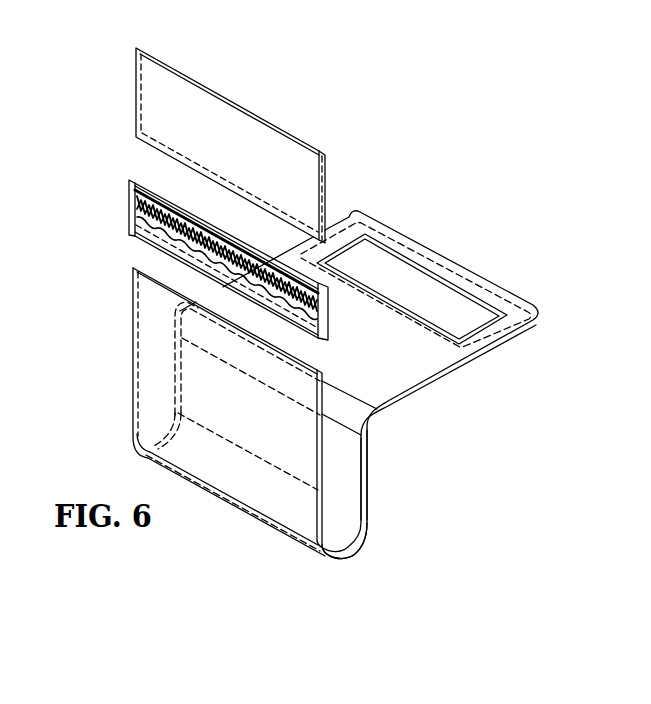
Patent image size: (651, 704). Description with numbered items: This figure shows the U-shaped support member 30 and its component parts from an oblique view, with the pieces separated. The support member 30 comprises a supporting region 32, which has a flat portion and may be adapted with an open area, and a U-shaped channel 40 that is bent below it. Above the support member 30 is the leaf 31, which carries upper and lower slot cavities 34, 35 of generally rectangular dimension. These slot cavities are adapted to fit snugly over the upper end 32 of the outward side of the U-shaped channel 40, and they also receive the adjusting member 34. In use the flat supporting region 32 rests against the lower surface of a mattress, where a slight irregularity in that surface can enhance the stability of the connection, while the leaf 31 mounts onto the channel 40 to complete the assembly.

The support member 30 is at (350, 409).
The leaf 31 is at (130, 212).
The supporting region 32 is at (433, 292).
The adjusting member 34 is at (368, 463).
The lower slot cavity 35 is at (236, 396).
The U-shaped channel 40 is at (337, 533).